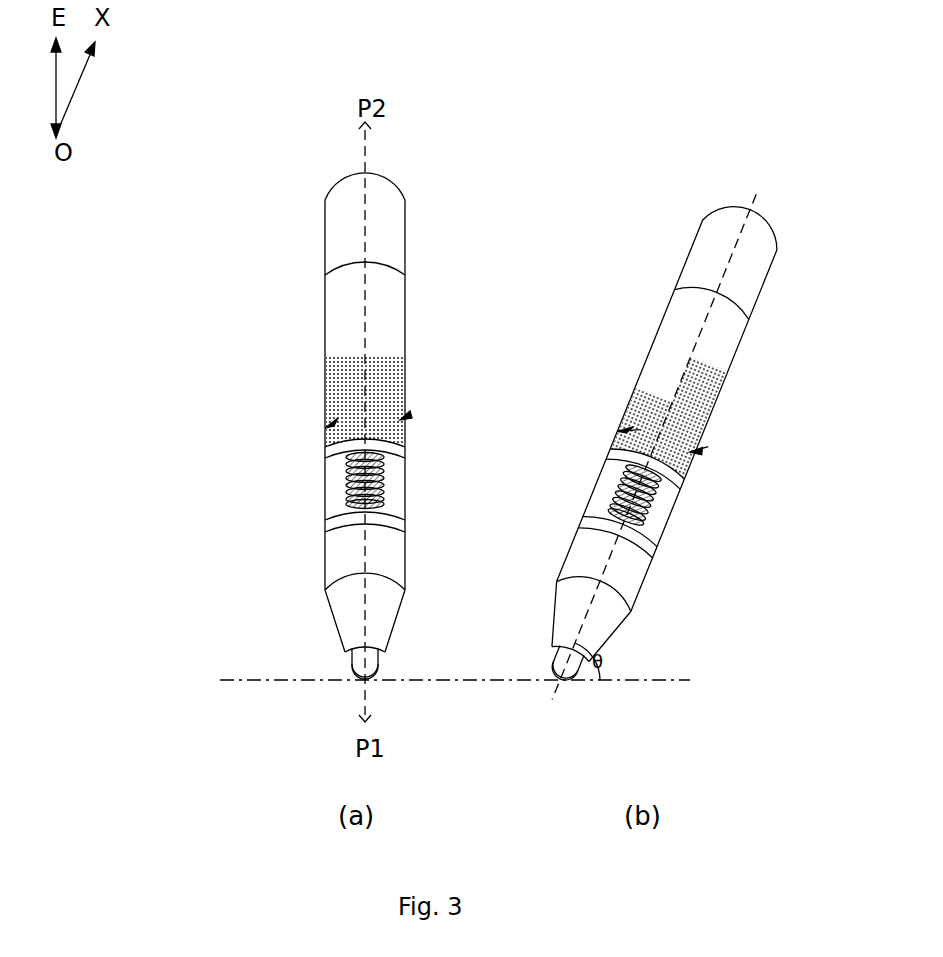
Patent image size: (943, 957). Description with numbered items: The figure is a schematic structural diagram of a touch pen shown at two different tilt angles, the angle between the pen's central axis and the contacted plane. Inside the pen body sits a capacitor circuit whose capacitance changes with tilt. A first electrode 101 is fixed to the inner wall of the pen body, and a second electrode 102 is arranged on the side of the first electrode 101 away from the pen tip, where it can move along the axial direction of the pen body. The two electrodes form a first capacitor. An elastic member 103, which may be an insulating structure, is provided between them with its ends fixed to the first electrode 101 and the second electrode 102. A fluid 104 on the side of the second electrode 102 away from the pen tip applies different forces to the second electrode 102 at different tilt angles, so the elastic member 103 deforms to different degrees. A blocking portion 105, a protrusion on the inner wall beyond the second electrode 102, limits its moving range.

The first electrode 101 is at (328, 528).
The second electrode 102 is at (340, 456).
The elastic member 103 is at (355, 485).
The fluid 104 is at (342, 378).
The blocking portion 105 is at (330, 425).